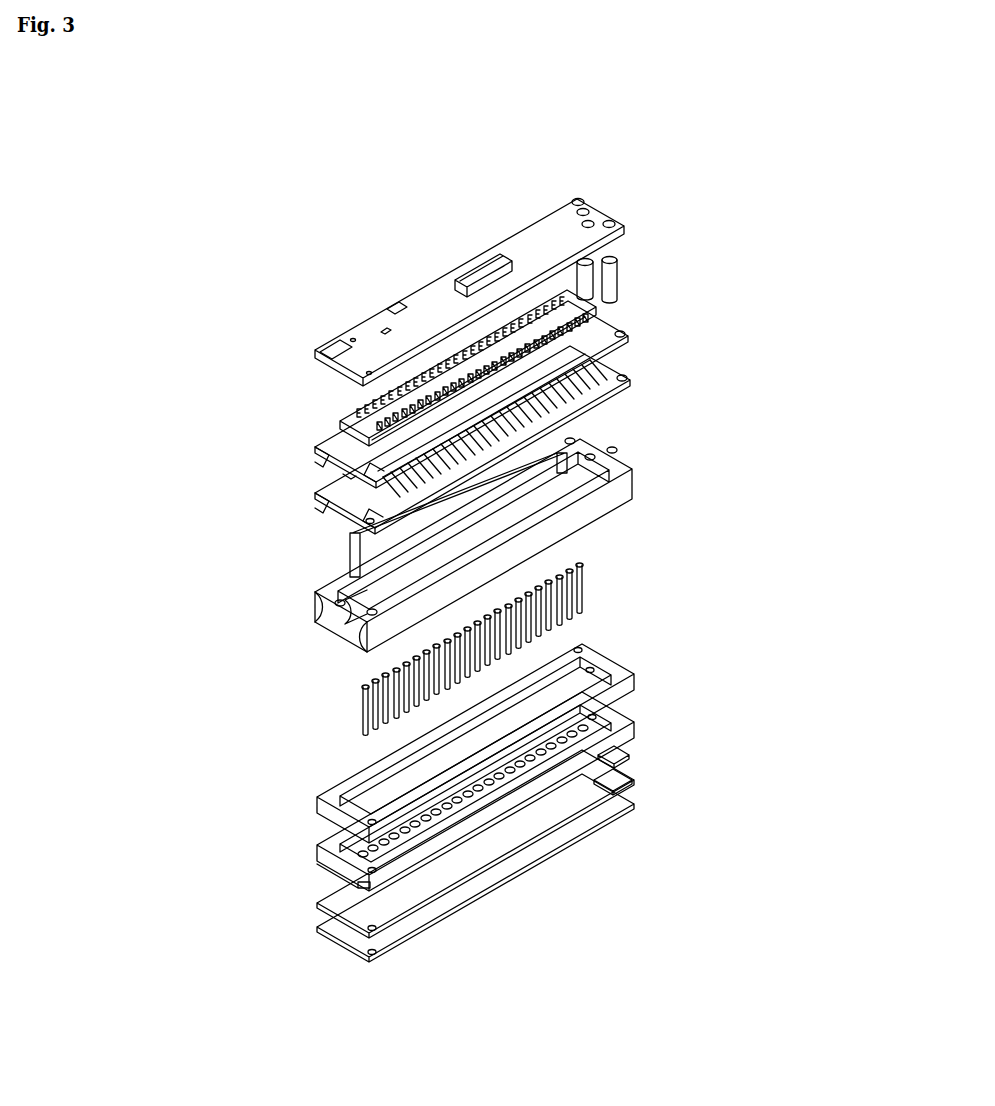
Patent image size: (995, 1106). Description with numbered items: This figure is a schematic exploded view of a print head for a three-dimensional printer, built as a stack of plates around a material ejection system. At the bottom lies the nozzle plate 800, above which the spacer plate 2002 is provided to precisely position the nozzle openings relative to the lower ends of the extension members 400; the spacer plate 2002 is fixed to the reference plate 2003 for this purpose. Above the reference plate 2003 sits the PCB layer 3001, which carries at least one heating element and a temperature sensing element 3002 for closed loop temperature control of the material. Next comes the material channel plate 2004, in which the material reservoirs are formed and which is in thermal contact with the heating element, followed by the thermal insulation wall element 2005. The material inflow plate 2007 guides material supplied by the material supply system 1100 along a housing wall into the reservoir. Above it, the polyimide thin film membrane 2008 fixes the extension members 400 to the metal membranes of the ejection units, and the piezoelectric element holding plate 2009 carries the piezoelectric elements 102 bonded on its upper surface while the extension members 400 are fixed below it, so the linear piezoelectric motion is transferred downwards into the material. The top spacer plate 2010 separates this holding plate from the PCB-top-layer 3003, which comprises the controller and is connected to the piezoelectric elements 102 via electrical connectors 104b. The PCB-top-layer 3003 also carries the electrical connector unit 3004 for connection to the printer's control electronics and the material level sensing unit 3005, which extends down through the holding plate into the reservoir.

The PCB-top-layer 3003 is at (631, 225).
The electrical connector unit 3004 is at (437, 277).
The material supply system 1100 is at (622, 274).
The electrical connectors 104b is at (346, 416).
The top spacer plate 2010 is at (634, 325).
The piezoelectric elements 102 is at (340, 480).
The piezoelectric element holding plate 2009 is at (632, 377).
The polyimide thin film membrane 2008 is at (317, 510).
The material level sensing unit 3005 is at (349, 544).
The material inflow plate 2007 is at (633, 463).
The extension members 400 is at (363, 683).
The thermal insulation wall element 2005 is at (633, 677).
The material channel plate 2004 is at (635, 717).
The PCB layer 3001 is at (318, 880).
The temperature sensing element 3002 is at (633, 760).
The reference plate 2003 is at (633, 777).
The spacer plate 2002 is at (318, 918).
The nozzle plate 800 is at (318, 933).